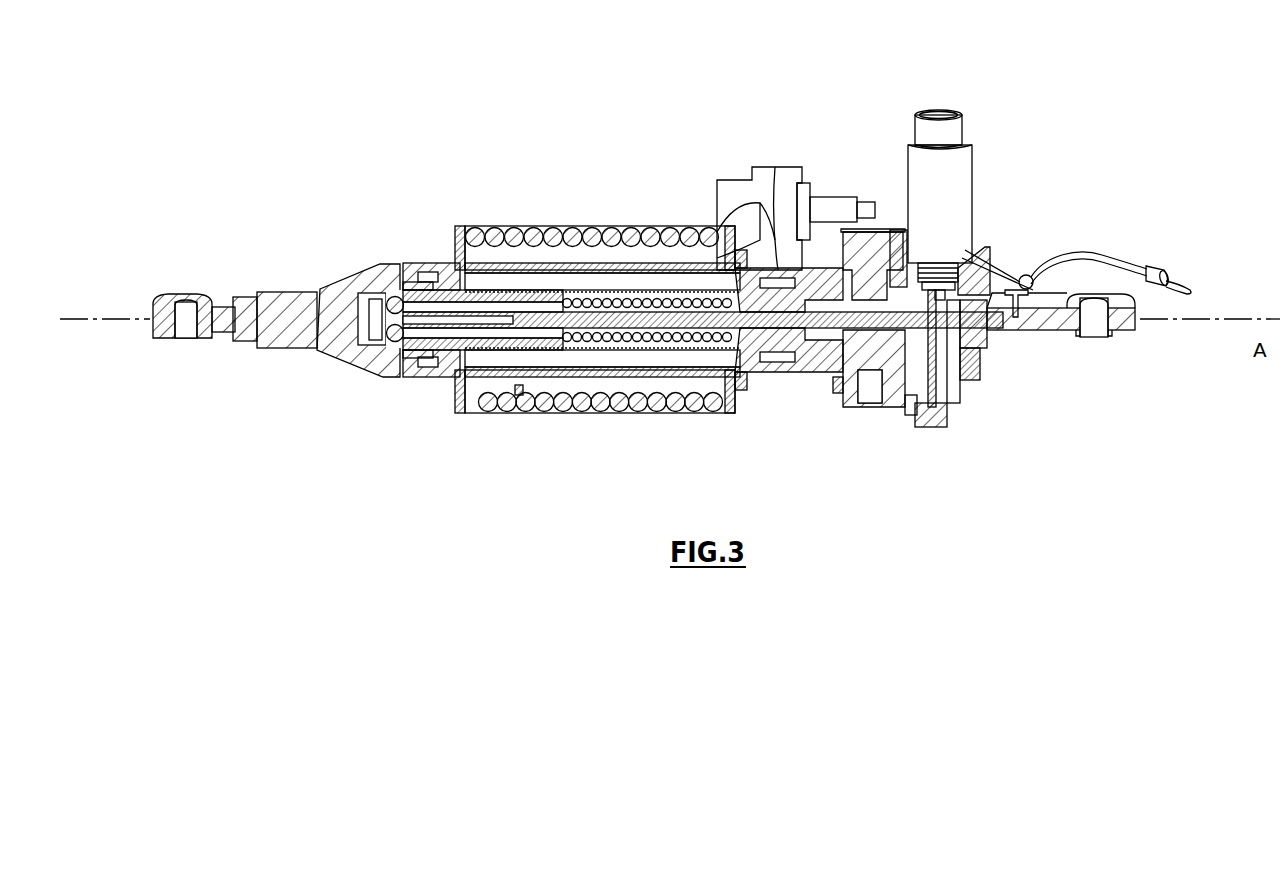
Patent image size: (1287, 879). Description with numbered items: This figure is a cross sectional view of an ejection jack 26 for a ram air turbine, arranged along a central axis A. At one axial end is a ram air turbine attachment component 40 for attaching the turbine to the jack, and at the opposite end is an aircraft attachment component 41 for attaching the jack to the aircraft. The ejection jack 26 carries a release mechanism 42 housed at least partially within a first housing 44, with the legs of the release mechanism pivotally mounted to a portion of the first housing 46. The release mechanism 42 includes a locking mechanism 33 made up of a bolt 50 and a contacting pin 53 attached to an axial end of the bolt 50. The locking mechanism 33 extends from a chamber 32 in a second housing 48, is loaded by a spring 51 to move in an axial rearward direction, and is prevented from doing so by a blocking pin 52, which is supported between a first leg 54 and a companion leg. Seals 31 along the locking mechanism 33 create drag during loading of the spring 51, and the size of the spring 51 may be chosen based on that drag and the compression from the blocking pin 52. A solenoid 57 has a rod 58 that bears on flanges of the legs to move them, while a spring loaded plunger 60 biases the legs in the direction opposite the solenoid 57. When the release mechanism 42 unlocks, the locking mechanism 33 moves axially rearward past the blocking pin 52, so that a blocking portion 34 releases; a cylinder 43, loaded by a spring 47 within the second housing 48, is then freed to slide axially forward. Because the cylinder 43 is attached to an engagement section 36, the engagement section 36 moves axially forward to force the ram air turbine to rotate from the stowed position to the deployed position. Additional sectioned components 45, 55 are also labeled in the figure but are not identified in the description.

The ejection jack 26 is at (1030, 78).
The ram air turbine attachment component 40 is at (205, 250).
The engagement section 36 is at (335, 283).
The blocking portion 34 is at (398, 286).
The cylinder 43 is at (447, 266).
The chamber 32 is at (540, 300).
The spring 51 is at (637, 303).
The second housing 48 is at (720, 205).
The solenoid 57 is at (908, 165).
The first housing 44 is at (890, 225).
The first housing 46 is at (985, 250).
The rod 58 is at (978, 275).
The aircraft attachment component 41 is at (1095, 258).
The seals 31 is at (447, 378).
The locking mechanism 33 is at (530, 362).
The spring 47 is at (634, 404).
The spring 55 is at (705, 375).
The shaft 45 is at (740, 350).
The bolt 50 is at (905, 417).
The spring loaded plunger 60 is at (934, 352).
The contacting pin 53 is at (952, 362).
The blocking pin 52 is at (975, 352).
The first leg 54 is at (978, 322).
The release mechanism 42 is at (1026, 356).